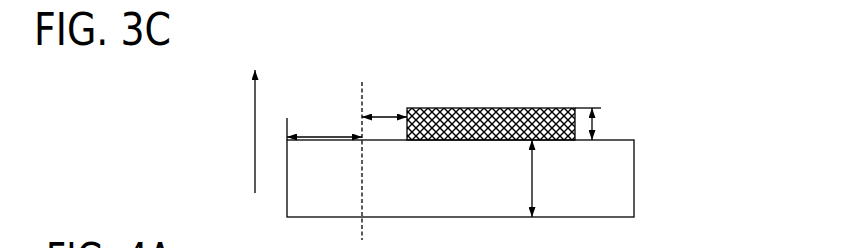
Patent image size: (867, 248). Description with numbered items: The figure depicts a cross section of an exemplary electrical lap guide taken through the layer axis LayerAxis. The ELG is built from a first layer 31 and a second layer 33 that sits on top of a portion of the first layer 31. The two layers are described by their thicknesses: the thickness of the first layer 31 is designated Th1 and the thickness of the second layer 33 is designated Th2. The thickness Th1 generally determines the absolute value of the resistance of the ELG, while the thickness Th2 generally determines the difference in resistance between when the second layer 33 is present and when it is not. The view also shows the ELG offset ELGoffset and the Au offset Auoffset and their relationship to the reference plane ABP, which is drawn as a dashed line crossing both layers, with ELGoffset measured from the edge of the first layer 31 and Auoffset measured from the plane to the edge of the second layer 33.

The first layer 31 is at (623, 167).
The second layer 33 is at (538, 108).
The element ABP is at (362, 98).
The ELG offset ELGoffset is at (318, 137).
The Au offset Auoffset is at (388, 117).
The thickness of the first layer Th1 is at (554, 178).
The thickness of the second layer Th2 is at (604, 124).
The layer axis LayerAxis is at (211, 131).